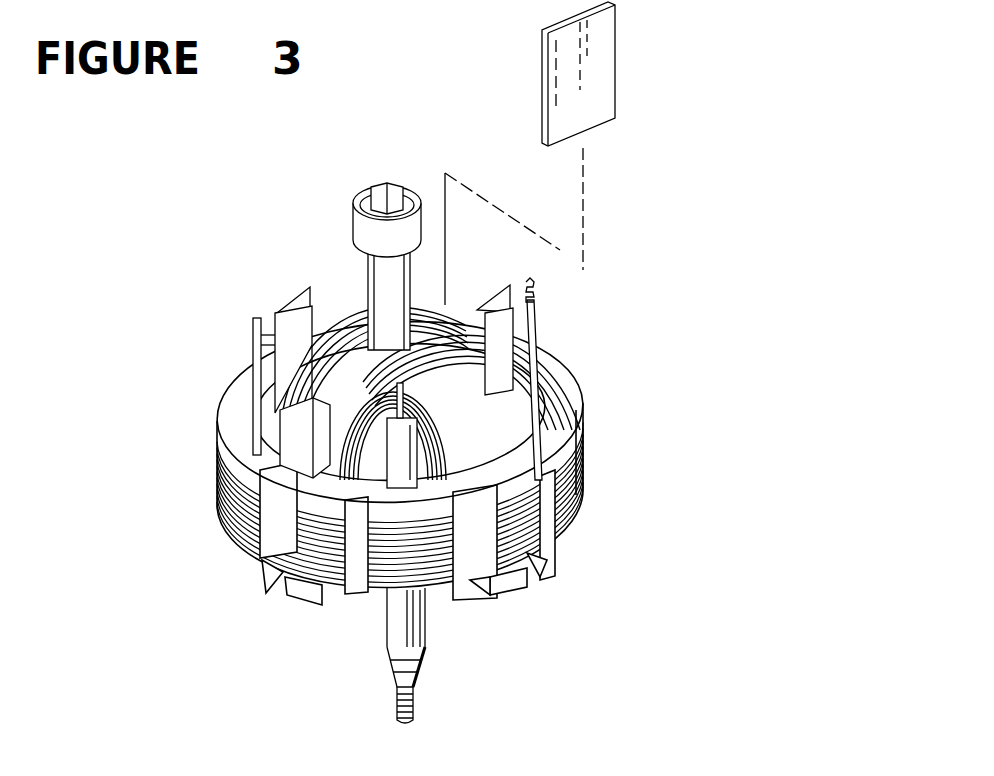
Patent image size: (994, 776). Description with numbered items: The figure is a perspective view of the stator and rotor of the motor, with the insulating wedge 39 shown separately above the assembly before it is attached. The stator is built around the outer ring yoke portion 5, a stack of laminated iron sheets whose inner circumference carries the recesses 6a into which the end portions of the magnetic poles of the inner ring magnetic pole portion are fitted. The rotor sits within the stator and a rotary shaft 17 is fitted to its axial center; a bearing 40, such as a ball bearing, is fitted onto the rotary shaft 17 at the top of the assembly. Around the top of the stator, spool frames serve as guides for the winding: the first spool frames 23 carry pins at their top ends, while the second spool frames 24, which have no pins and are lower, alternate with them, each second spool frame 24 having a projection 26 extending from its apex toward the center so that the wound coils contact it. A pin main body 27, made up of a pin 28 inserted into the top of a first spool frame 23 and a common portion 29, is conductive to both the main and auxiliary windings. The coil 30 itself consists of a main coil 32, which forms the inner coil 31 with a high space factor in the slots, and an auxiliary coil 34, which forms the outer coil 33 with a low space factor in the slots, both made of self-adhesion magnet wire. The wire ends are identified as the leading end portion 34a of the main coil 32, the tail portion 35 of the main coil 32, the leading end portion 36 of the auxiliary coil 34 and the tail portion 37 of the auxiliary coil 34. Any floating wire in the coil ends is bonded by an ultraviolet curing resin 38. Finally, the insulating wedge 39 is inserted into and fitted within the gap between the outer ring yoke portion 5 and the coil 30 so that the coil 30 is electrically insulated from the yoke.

The outer ring yoke portion 5 is at (553, 417).
The recesses for fittings 6a is at (573, 470).
The rotary shaft 17 is at (367, 260).
The first spool frames 23 is at (533, 327).
The second spool frames 24 is at (523, 247).
The projection 26 is at (460, 307).
The pin main body 27 is at (387, 390).
The pin 28 is at (533, 288).
The common portion 29 is at (253, 313).
The coil 30 is at (283, 316).
The inner coil 31 is at (460, 470).
The main coil 32 is at (467, 478).
The outer coil 33 is at (507, 373).
The auxiliary coil 34 is at (340, 310).
The leading end portion of the main coil 34a is at (533, 387).
The tail portion of the main coil 35 is at (253, 340).
The leading end portion of the auxiliary coil 36 is at (413, 300).
The tail portion of the auxiliary coil 37 is at (250, 348).
The ultraviolet curing resin 38 is at (288, 378).
The insulating wedge 39 is at (597, 90).
The bearing 40 is at (353, 208).